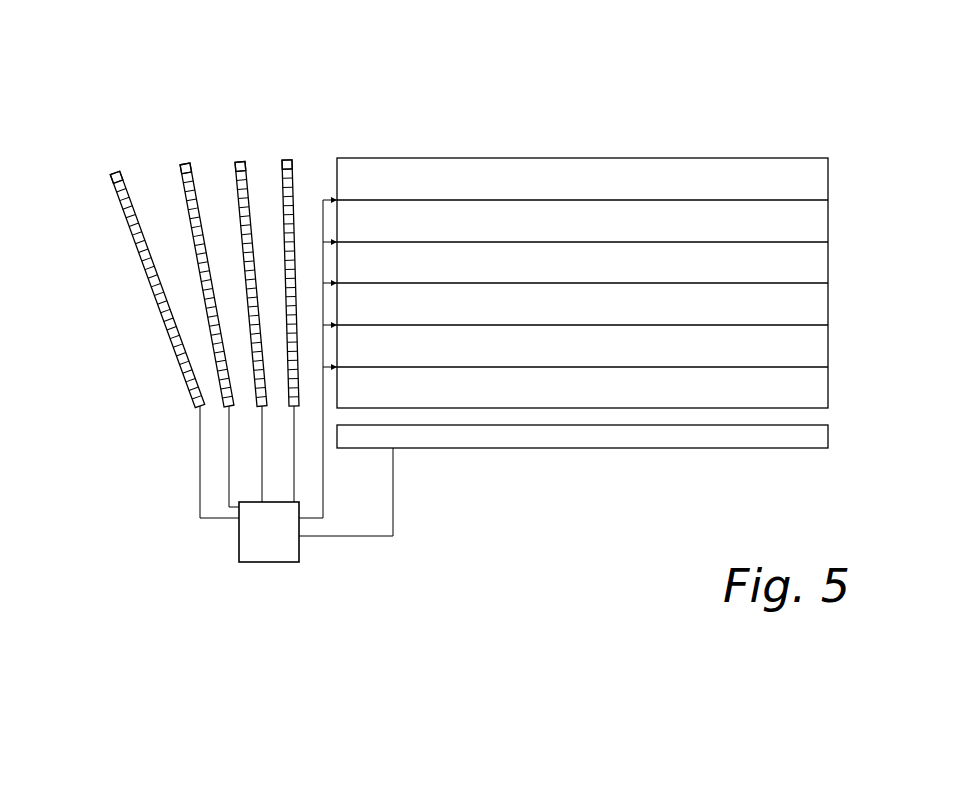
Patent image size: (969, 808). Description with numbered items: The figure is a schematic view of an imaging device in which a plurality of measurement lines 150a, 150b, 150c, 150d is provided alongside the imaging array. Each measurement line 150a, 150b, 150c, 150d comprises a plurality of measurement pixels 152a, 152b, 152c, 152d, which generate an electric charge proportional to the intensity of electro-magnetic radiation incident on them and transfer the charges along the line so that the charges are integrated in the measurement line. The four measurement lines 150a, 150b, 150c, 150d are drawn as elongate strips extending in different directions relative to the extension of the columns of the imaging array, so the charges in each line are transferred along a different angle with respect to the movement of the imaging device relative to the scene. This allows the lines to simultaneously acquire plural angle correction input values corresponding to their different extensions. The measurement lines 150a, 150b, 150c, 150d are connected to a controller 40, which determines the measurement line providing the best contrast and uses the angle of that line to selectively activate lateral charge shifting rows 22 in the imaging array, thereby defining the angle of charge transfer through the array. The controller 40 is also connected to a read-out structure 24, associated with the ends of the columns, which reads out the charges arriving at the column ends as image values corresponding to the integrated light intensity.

The lateral charge shifting rows 22 is at (828, 198).
The read-out structure 24 is at (828, 432).
The controller 40 is at (258, 562).
The measurement line 150a is at (285, 158).
The measurement line 150b is at (240, 160).
The measurement line 150c is at (185, 162).
The measurement line 150d is at (117, 172).
The measurement pixels 152a is at (289, 160).
The measurement pixels 152b is at (240, 163).
The measurement pixels 152c is at (183, 165).
The measurement pixels 152d is at (112, 177).